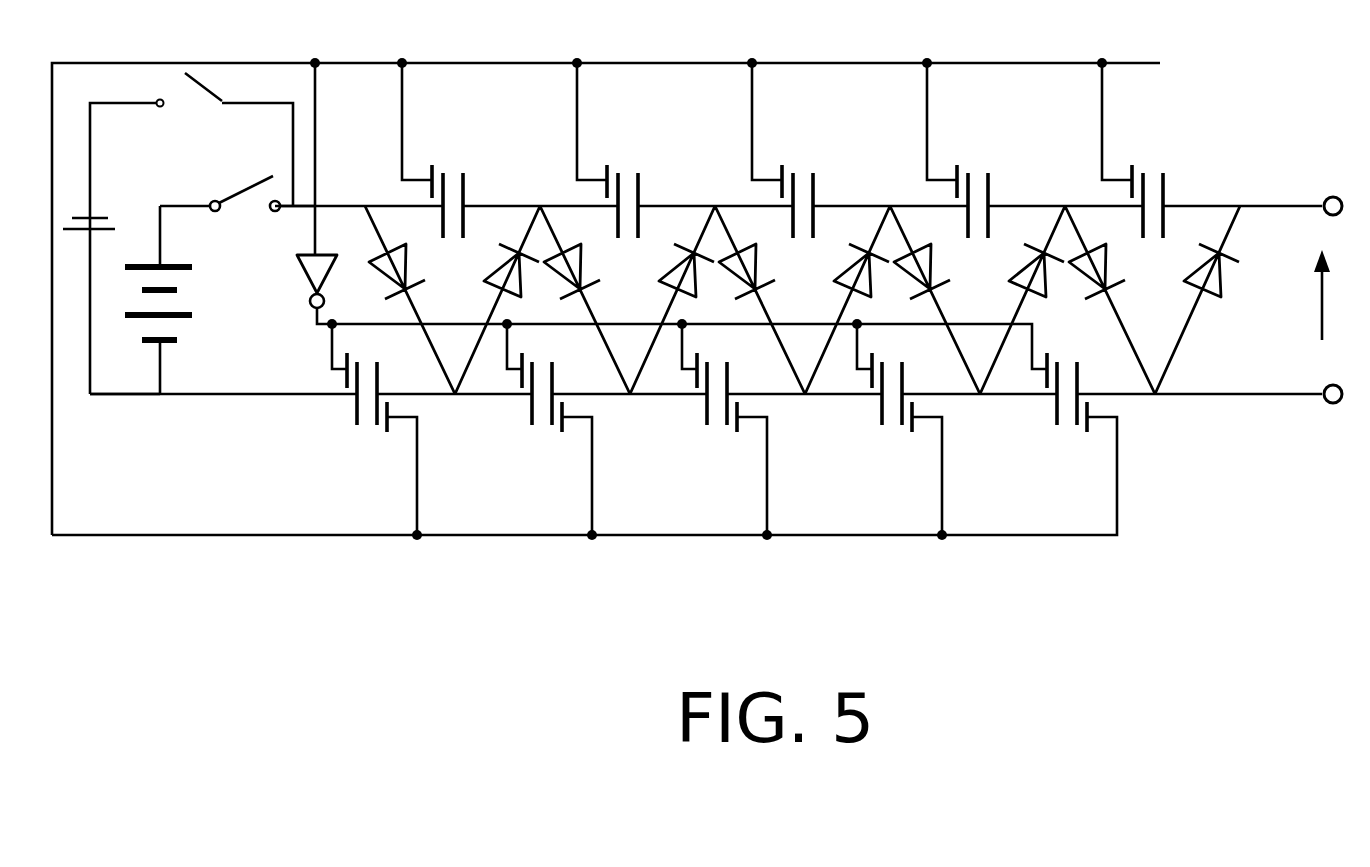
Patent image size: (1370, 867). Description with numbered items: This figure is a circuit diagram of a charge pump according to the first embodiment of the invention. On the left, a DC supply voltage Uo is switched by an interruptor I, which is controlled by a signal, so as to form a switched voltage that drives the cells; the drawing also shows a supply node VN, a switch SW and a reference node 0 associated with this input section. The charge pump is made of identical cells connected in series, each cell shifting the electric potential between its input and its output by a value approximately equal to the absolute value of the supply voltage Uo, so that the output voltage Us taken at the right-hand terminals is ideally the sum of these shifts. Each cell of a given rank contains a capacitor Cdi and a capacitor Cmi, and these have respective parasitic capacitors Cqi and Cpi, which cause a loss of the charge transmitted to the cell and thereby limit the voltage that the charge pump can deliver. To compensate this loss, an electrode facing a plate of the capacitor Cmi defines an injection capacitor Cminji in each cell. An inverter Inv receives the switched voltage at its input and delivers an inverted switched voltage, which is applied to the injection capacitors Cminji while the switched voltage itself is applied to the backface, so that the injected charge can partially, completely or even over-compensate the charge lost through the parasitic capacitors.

The supply voltage source VN is at (113, 247).
The switch SW is at (183, 97).
The interruptor I is at (237, 185).
The DC supply voltage Uo is at (158, 280).
The inverter Inv is at (297, 273).
The ground node 0 is at (133, 416).
The injection capacitor Cminji is at (868, 357).
The parasitic capacitor Cqi is at (964, 172).
The capacitor Cdi is at (993, 187).
The capacitor Cmi is at (880, 405).
The parasitic capacitor Cpi is at (912, 428).
The output voltage Us is at (1342, 295).